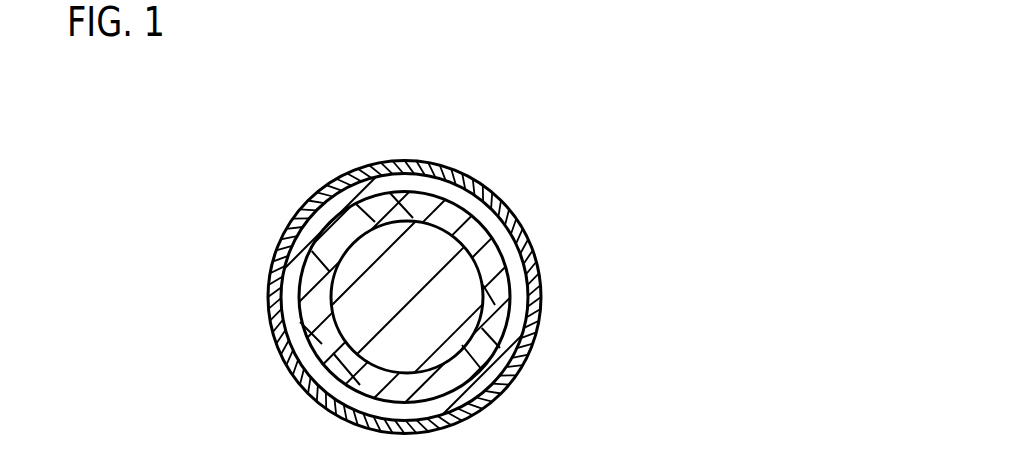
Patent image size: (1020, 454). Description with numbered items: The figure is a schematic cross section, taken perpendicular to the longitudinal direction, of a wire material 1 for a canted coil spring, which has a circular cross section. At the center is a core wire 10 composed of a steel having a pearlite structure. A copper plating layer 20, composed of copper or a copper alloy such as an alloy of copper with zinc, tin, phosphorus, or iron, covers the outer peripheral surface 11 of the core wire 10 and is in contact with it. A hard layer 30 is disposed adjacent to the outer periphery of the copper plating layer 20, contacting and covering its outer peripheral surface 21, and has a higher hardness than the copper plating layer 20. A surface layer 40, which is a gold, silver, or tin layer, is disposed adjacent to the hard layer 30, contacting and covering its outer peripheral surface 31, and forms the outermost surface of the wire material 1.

The wire material for a canted coil spring 1 is at (487, 140).
The core wire 10 is at (462, 300).
The outer peripheral surface of the core wire 11 is at (478, 259).
The copper plating layer 20 is at (493, 329).
The outer peripheral surface of the copper plating layer 21 is at (493, 233).
The hard layer 30 is at (503, 360).
The outer peripheral surface of the hard layer 31 is at (490, 205).
The surface layer 40 is at (508, 388).